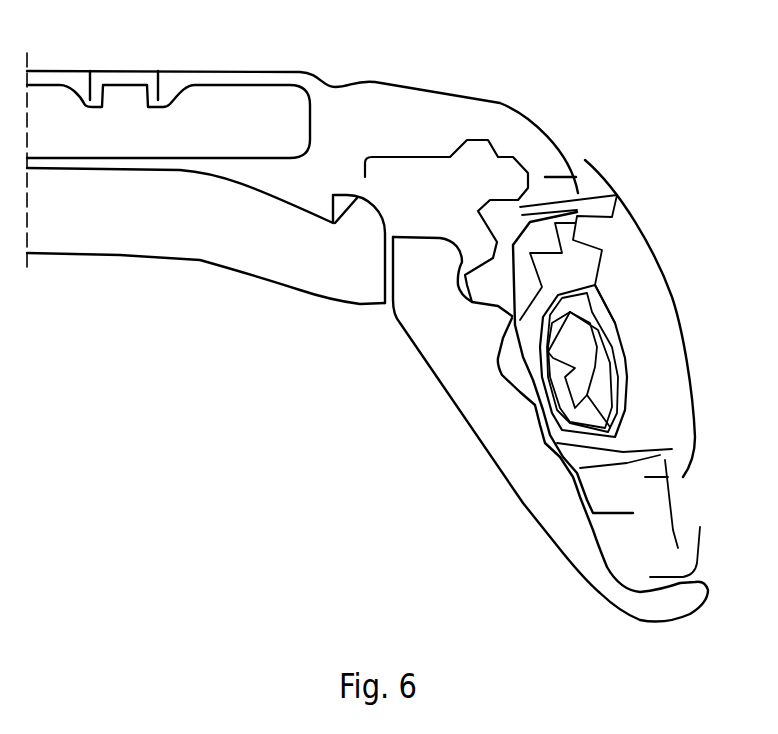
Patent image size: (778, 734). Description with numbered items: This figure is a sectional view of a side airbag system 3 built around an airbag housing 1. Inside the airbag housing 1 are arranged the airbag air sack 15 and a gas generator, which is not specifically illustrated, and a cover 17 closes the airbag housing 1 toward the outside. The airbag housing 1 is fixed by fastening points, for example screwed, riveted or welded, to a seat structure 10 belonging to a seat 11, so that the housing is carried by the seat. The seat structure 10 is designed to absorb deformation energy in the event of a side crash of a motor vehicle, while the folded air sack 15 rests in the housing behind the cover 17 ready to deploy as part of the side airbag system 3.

The airbag housing 1 is at (523, 357).
The side airbag system 3 is at (617, 160).
The seat structure 10 is at (498, 157).
The seat 11 is at (258, 283).
The airbag air sack 15 is at (615, 323).
The cover 17 is at (647, 238).